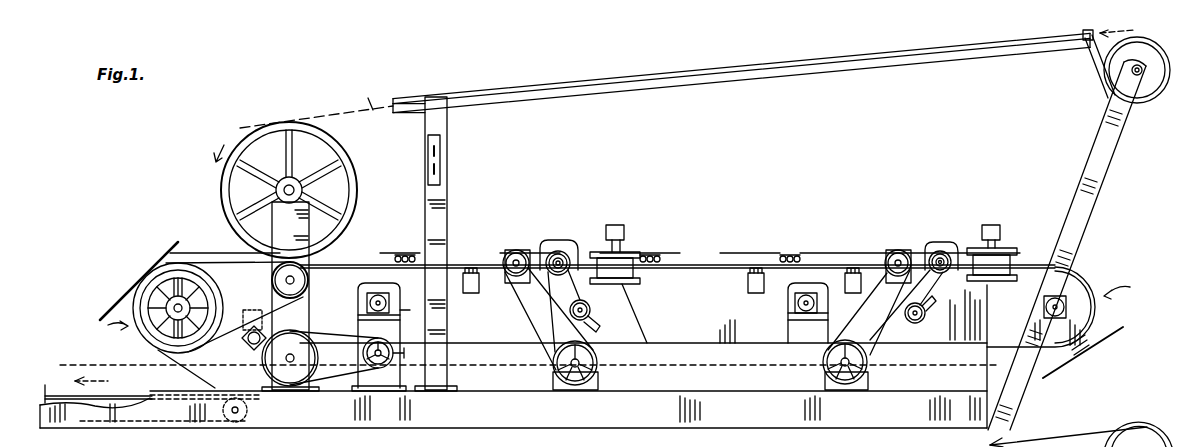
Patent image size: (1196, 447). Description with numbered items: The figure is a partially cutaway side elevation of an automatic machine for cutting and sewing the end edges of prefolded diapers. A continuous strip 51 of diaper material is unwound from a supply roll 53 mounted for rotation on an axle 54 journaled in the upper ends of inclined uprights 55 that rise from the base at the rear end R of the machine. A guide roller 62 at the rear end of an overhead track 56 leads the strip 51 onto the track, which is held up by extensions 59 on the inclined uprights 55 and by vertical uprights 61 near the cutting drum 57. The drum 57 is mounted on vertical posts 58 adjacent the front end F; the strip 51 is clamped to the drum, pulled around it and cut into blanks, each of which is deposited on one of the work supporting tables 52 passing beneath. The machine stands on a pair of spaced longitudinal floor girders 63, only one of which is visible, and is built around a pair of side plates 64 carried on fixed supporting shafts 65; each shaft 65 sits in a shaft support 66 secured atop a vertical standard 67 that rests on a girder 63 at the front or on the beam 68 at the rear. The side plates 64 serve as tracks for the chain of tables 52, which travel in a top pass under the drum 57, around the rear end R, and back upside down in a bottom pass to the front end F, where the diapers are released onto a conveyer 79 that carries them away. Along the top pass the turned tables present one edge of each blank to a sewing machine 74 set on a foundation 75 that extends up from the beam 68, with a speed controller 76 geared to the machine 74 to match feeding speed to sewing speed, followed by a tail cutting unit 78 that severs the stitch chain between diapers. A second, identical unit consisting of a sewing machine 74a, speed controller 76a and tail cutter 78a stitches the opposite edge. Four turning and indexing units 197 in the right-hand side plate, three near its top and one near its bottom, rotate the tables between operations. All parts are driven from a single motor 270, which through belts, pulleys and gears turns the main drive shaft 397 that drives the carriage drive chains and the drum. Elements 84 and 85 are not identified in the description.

The continuous strip of diaper material 51 is at (373, 93).
The work supporting table 52 is at (172, 243).
The supply roll 53 is at (1140, 72).
The axle 54 is at (1140, 68).
The inclined uprights 55 is at (1114, 176).
The overhead track 56 is at (608, 92).
The cutting drum 57 is at (303, 182).
The vertical posts 58 is at (290, 296).
The extensions 59 is at (1094, 76).
The vertical uprights 61 is at (447, 201).
The guide roller 62 is at (1094, 32).
The longitudinal floor girders 63 is at (652, 420).
The side plates 64 is at (513, 337).
The fixed supporting shafts 65 is at (366, 300).
The shaft support 66 is at (390, 303).
The vertical standard 67 is at (378, 330).
The beam 68 is at (895, 378).
The sewing machine 74 is at (560, 242).
The second sewing machine 74a is at (946, 241).
The foundation 75 is at (618, 311).
The speed controller 76 is at (515, 250).
The second speed controller 76a is at (899, 250).
The tail cutting unit 78 is at (626, 232).
The second tail cutter 78a is at (1000, 246).
The conveyer 79 is at (63, 392).
The wheel hub 84 is at (291, 182).
The wheel shaft 85 is at (303, 186).
The turning and indexing unit 197 is at (262, 312).
The motor 270 is at (284, 386).
The main drive shaft 397 is at (222, 309).
The front end F is at (110, 331).
The rear end R is at (1081, 366).